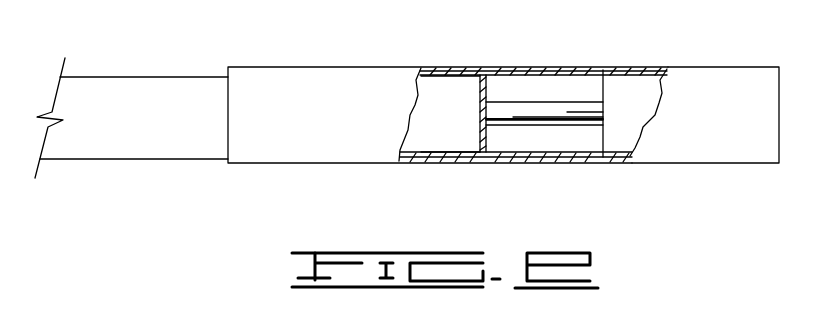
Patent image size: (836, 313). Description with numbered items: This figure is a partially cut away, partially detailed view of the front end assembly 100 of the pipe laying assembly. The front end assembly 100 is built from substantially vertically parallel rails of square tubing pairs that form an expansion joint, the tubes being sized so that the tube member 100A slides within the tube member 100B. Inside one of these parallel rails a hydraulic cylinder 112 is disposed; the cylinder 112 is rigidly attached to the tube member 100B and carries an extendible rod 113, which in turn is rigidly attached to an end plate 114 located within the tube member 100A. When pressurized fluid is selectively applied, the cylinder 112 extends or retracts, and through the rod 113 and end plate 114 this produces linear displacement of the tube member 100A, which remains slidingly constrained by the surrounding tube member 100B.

The front end assembly 100 is at (303, 146).
The tube member 100A is at (103, 148).
The tube member 100B is at (682, 152).
The hydraulic cylinder 112 is at (630, 83).
The extendible rod 113 is at (535, 123).
The end plate 114 is at (487, 92).